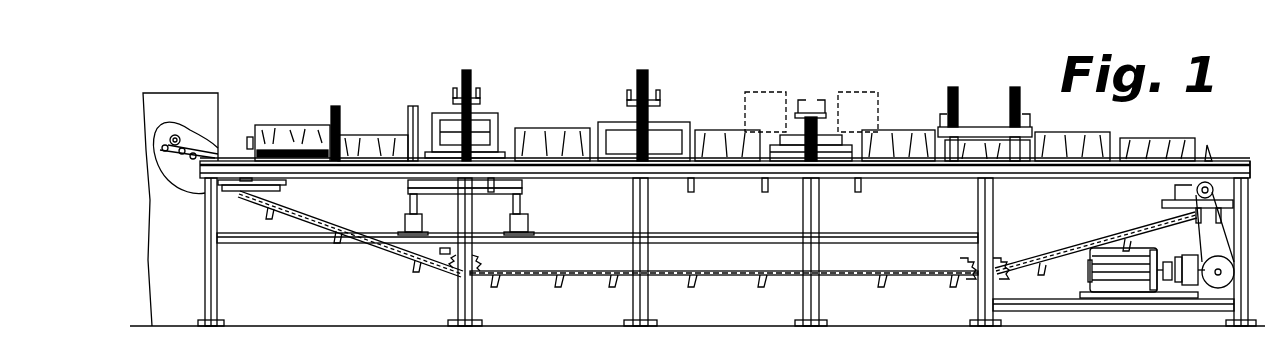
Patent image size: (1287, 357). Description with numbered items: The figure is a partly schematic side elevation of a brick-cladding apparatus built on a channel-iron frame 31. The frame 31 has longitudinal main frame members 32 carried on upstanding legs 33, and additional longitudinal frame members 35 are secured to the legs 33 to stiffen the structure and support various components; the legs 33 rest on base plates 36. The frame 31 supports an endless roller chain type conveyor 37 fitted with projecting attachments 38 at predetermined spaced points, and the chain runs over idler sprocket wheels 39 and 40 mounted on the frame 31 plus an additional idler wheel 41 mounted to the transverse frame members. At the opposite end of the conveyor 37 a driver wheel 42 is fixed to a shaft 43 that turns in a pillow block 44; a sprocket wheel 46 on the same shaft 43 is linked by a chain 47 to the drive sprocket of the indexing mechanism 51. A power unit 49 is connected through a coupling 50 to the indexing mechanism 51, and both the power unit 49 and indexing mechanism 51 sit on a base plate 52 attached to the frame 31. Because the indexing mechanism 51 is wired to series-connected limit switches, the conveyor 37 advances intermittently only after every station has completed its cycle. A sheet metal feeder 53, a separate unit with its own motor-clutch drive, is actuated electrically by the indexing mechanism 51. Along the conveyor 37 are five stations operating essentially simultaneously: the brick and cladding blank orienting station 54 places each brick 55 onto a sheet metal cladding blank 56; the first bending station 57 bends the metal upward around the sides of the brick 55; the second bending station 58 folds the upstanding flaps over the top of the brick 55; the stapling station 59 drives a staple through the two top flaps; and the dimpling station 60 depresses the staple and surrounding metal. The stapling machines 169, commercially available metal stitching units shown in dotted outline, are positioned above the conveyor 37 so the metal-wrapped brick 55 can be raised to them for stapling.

The frame 31 is at (1253, 298).
The longitudinal main frame members 32 is at (538, 177).
The upstanding members or legs 33 is at (205, 258).
The additional longitudinal frame members 35 is at (305, 244).
The base plates 36 is at (210, 327).
The endless roller chain type conveyor 37 is at (322, 206).
The projecting attachments 38 is at (1115, 148).
The idler sprocket wheel 39 is at (962, 265).
The idler sprocket wheel 40 is at (478, 262).
The additional idler wheel 41 is at (242, 196).
The driver wheel 42 is at (1180, 195).
The shaft 43 is at (1185, 208).
The pillow block 44 is at (1185, 200).
The sprocket wheel 46 is at (1172, 185).
The chain 47 is at (1200, 237).
The power unit 49 is at (1090, 270).
The coupling 50 is at (1172, 262).
The indexing mechanism 51 is at (1222, 257).
The base plate 52 is at (1081, 292).
The sheet metal feeder 53 is at (178, 92).
The brick and cladding blank orienting station 54 is at (372, 124).
The brick 55 is at (282, 125).
The sheet metal cladding blank 56 is at (212, 147).
The first bending station 57 is at (436, 106).
The second bending station 58 is at (614, 112).
The stapling station 59 is at (797, 94).
The dimpling station 60 is at (980, 122).
The stapling machine 169 is at (778, 117).